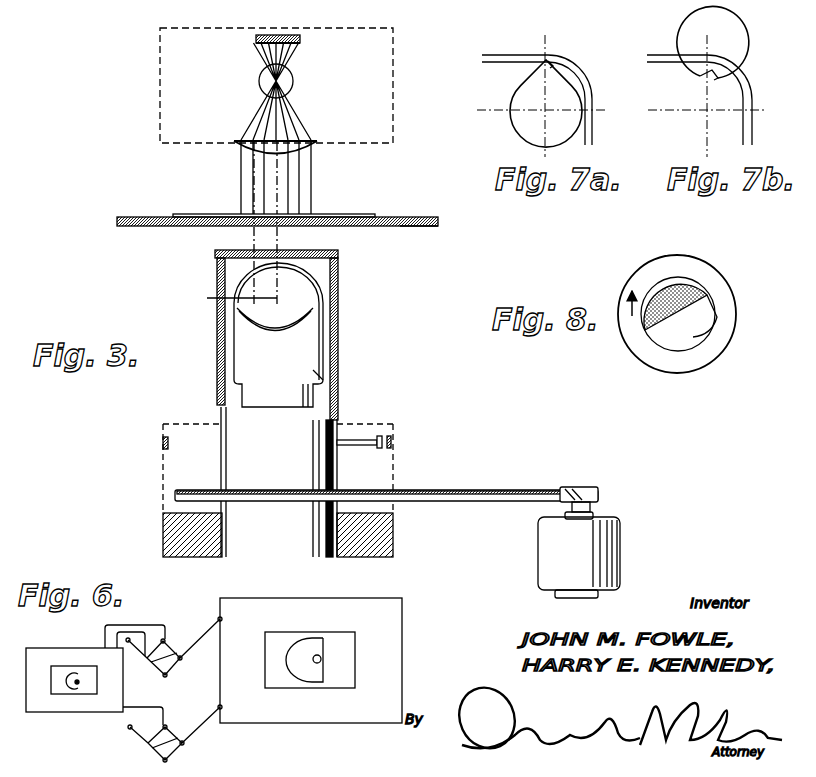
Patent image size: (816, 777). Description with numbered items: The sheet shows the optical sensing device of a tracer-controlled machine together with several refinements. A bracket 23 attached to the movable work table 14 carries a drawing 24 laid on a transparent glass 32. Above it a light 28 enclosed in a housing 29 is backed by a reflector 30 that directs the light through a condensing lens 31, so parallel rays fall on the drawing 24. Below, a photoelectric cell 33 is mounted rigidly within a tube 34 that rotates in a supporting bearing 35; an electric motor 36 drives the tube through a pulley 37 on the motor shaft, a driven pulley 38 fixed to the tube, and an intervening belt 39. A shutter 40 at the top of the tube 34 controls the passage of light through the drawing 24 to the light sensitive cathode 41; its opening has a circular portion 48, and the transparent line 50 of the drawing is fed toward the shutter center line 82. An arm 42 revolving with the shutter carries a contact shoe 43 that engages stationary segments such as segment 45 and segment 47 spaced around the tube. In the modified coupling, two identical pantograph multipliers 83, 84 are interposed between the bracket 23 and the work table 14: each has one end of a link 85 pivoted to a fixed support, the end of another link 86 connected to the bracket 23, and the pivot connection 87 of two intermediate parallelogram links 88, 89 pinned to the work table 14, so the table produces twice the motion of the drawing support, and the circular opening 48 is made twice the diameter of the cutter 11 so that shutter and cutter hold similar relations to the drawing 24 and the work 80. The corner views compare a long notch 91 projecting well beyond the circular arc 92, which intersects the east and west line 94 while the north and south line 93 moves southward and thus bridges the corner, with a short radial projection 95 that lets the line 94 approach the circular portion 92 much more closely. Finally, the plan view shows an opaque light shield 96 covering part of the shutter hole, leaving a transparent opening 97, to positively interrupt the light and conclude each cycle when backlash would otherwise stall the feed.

In FIG. 6, the cutter 11 is at (72, 694).
In FIG. 6, the movable work table 14 is at (40, 712).
In FIG. 6, the bracket 23 is at (363, 604).
In FIG. 3, the drawing 24 is at (277, 206).
In FIG. 6, the drawing 24 is at (307, 680).
In FIG. 3, the light 28 is at (293, 81).
In FIG. 3, the housing 29 is at (393, 105).
In FIG. 3, the reflector 30 is at (297, 36).
In FIG. 3, the condensing lens 31 is at (308, 141).
In FIG. 3, the transparent glass 32 is at (414, 227).
In FIG. 3, the photoelectric cell 33 is at (320, 372).
In FIG. 3, the tube 34 is at (338, 338).
In FIG. 3, the supporting bearing 35 is at (375, 535).
In FIG. 3, the electric motor 36 is at (620, 558).
In FIG. 3, the pulley 37 is at (573, 487).
In FIG. 3, the driven pulley 38 is at (385, 490).
In FIG. 3, the belt 39 is at (386, 482).
In FIG. 3, the shutter 40 is at (320, 250).
In FIG. 3, the light sensitive cathode 41 is at (275, 330).
In FIG. 3, the arm 42 is at (350, 446).
In FIG. 3, the contact shoe 43 is at (381, 436).
In FIG. 3, the stationary segment 45 is at (392, 443).
In FIG. 3, the stationary segment 47 is at (161, 444).
In FIG. 6, the circular opening 48 is at (322, 659).
In FIG. 3, the transparent line 50 is at (246, 215).
In FIG. 6, the work 80 is at (70, 676).
In FIG. 3, the shutter center line 82 is at (228, 295).
In FIG. 6, the pantograph multiplier 83 is at (147, 675).
In FIG. 6, the pantograph multiplier 84 is at (184, 739).
In FIG. 6, the link 85 is at (126, 636).
In FIG. 6, the link 86 is at (204, 636).
In FIG. 6, the pivot connection 87 is at (165, 638).
In FIG. 6, the parallelogram link 88 is at (162, 646).
In FIG. 6, the parallelogram link 89 is at (163, 674).
In FIG. 7A, the notch 91 is at (552, 62).
In FIG. 7A, the circular arc 92 is at (515, 128).
In FIG. 7B, the circular arc 92 is at (688, 140).
In FIG. 7A, the north and south line 93 is at (593, 135).
In FIG. 7B, the north and south line 93 is at (754, 135).
In FIG. 7A, the east and west line 94 is at (518, 52).
In FIG. 7B, the east and west line 94 is at (681, 52).
In FIG. 7B, the short radial projection 95 is at (713, 70).
In FIG. 8, the opaque light shield 96 is at (673, 292).
In FIG. 8, the transparent opening 97 is at (693, 337).